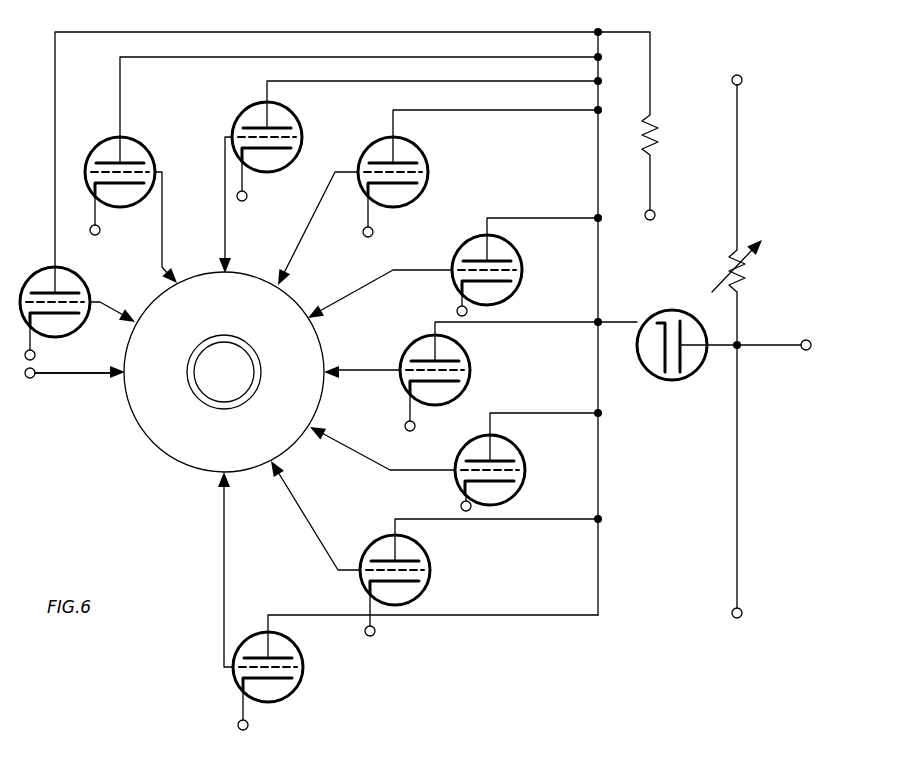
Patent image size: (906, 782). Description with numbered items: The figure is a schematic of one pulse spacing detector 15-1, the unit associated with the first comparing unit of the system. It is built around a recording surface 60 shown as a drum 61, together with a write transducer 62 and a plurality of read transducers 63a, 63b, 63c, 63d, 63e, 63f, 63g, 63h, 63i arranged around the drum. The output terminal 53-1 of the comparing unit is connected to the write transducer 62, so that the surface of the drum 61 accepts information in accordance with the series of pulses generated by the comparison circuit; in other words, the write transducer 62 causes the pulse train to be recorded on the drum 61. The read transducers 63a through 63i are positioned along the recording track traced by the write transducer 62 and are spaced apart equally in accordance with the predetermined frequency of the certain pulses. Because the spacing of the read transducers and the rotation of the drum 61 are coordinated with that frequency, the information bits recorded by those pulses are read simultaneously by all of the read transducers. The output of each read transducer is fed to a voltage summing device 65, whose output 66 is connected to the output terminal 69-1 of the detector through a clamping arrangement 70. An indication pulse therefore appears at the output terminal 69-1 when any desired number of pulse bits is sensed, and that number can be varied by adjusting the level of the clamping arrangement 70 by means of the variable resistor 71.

The recording surface 60 is at (143, 425).
The drum 61 is at (226, 438).
The pulse spacing detector 15-1 is at (160, 480).
The voltage summing device 65 is at (566, 311).
The read transducer 63a is at (138, 308).
The read transducer 63b is at (154, 276).
The read transducer 63c is at (220, 252).
The read transducer 63d is at (278, 269).
The read transducer 63e is at (448, 270).
The read transducer 63f is at (346, 354).
The read transducer 63g is at (318, 426).
The read transducer 63h is at (284, 467).
The read transducer 63i is at (246, 487).
The output terminal of comparing unit 53-1 is at (69, 364).
The write transducer 62 is at (118, 364).
The output of voltage summing device 66 is at (638, 320).
The clamping arrangement 70 is at (687, 351).
The output terminal of pulse spacing detector 69-1 is at (804, 343).
The resistor 71 is at (745, 294).